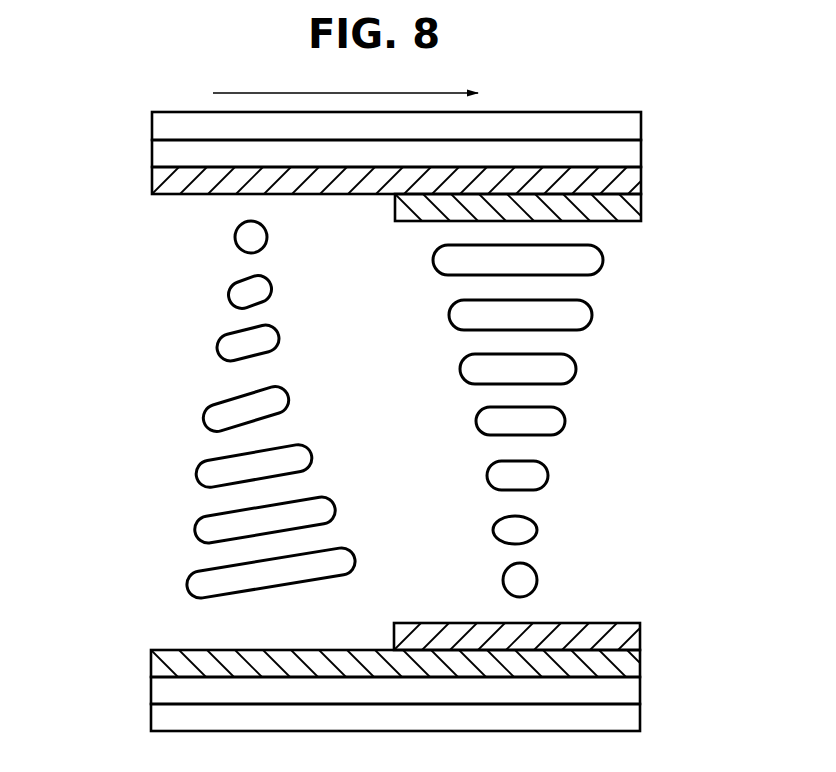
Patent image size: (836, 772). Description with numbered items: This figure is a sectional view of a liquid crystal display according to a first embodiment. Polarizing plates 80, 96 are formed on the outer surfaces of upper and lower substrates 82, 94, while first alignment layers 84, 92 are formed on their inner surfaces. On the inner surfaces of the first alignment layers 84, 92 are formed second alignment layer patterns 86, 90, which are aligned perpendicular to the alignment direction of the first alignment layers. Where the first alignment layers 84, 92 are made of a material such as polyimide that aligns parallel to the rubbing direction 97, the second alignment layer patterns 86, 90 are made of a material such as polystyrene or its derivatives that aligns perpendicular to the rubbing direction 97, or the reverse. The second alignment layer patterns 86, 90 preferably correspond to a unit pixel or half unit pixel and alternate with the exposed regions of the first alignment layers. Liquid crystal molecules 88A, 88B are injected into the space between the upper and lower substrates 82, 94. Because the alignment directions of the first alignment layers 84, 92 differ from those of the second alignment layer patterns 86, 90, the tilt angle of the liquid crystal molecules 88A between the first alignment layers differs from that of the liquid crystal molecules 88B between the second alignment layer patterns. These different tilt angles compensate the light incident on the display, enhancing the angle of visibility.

The polarizing plate 80 is at (623, 126).
The upper substrate 82 is at (623, 152).
The first alignment layer 84 is at (623, 178).
The second alignment layer pattern 86 is at (623, 205).
The liquid crystal molecules 88A is at (197, 441).
The liquid crystal molecules 88B is at (617, 333).
The second alignment layer pattern 90 is at (622, 634).
The first alignment layer 92 is at (622, 661).
The lower substrate 94 is at (622, 688).
The polarizing plate 96 is at (622, 715).
The rubbing direction 97 is at (370, 94).